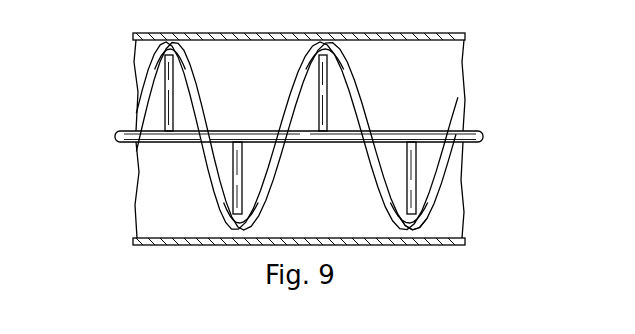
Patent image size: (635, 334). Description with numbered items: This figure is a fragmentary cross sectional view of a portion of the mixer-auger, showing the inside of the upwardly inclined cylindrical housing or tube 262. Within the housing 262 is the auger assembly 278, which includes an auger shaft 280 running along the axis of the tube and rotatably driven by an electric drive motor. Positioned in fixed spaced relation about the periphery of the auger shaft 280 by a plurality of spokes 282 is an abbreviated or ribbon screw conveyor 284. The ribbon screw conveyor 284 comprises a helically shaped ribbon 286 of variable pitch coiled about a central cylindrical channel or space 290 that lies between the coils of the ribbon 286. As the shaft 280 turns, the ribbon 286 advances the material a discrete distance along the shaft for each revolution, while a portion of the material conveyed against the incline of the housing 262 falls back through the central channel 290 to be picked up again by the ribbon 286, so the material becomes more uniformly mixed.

The mixer-auger cylindrical housing or tube 262 is at (213, 33).
The auger assembly 278 is at (446, 65).
The auger shaft 280 is at (477, 131).
The spokes 282 is at (326, 87).
The ribbon screw conveyor 284 is at (442, 214).
The helically shaped ribbon 286 is at (409, 240).
The central cylindrical channel or space 290 is at (176, 182).